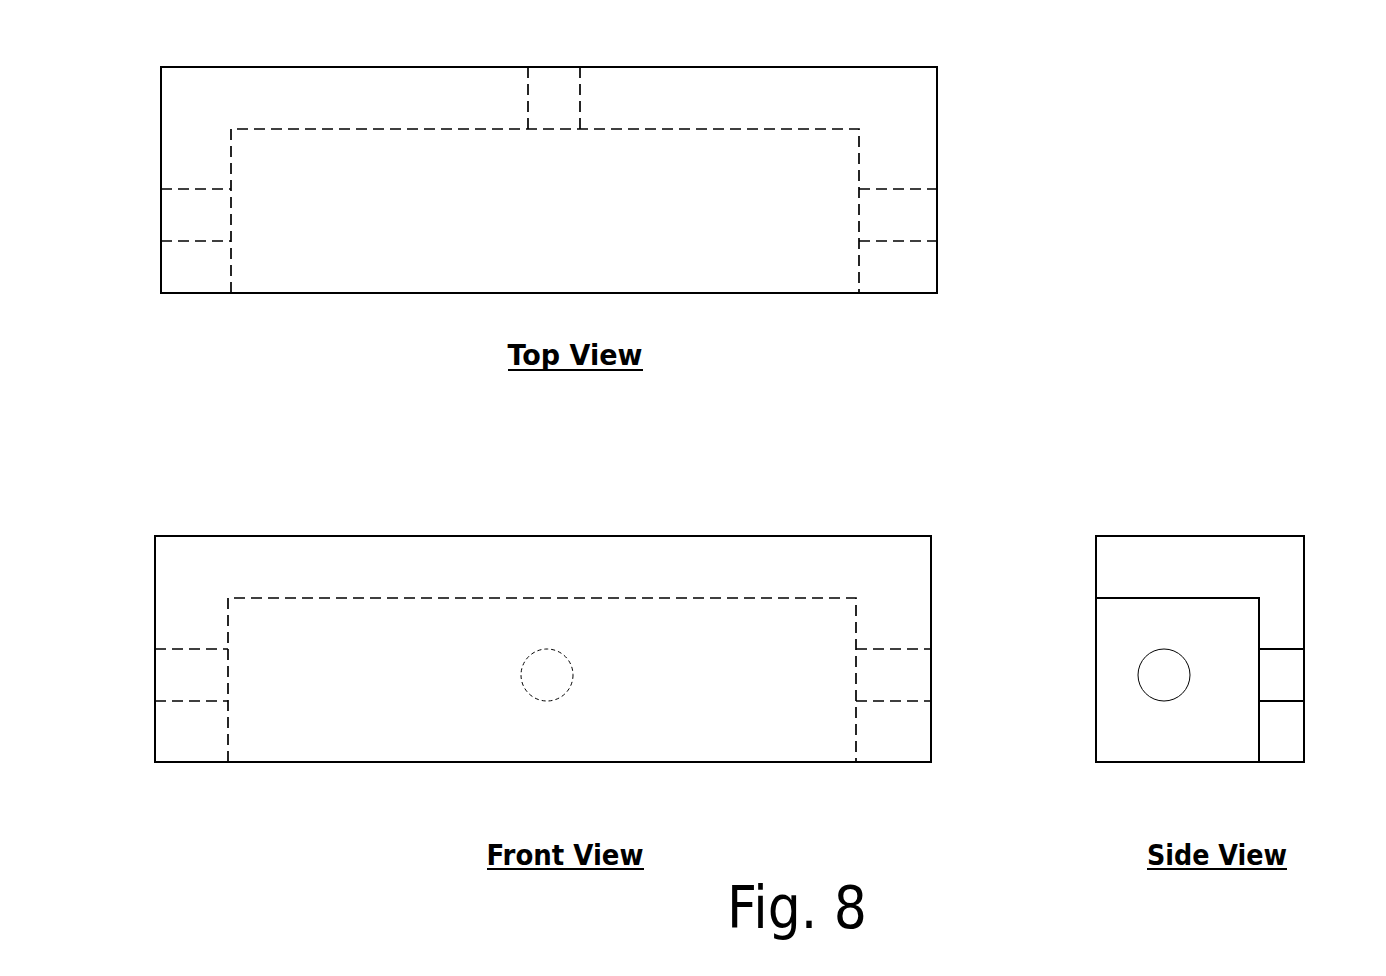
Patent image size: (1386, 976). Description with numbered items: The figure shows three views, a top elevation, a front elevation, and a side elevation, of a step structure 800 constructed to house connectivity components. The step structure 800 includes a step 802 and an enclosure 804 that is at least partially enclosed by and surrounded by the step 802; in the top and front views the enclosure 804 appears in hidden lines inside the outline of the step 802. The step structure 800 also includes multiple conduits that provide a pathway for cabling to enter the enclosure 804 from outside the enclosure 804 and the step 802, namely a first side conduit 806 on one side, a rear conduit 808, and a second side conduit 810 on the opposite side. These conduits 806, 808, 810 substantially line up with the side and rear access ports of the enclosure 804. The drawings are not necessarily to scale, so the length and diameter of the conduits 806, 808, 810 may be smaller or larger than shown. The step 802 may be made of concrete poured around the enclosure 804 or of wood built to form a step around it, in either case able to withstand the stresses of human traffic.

The step structure 800 is at (1188, 240).
The step 802 is at (937, 102).
The enclosure 804 is at (802, 293).
The first side conduit 806 is at (176, 208).
The rear conduit 808 is at (553, 72).
The second side conduit 810 is at (928, 217).